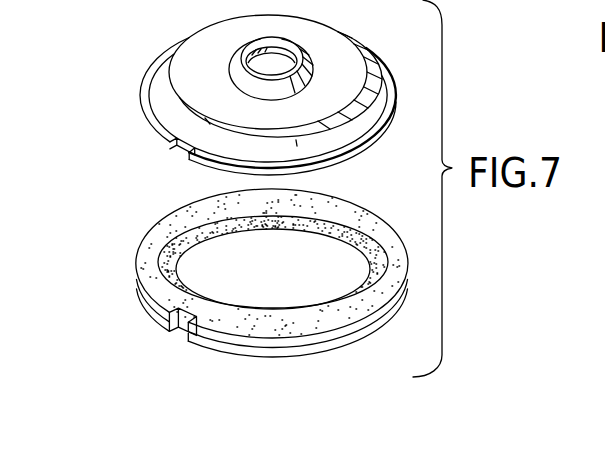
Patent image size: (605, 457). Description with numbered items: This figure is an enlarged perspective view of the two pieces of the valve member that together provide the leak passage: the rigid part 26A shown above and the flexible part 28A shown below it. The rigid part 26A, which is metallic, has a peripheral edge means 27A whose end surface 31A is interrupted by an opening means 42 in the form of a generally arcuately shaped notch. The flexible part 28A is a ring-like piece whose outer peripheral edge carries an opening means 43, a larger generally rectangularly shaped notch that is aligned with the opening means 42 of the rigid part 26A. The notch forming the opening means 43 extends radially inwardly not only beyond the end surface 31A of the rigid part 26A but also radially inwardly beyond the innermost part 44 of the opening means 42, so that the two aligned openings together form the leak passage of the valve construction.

The rigid part 26A is at (150, 102).
The peripheral edge means 27A is at (150, 118).
The end surface 31A is at (339, 161).
The innermost part 44 is at (187, 143).
The opening means 42 is at (177, 158).
The flexible part 28A is at (157, 267).
The opening means 43 is at (180, 327).